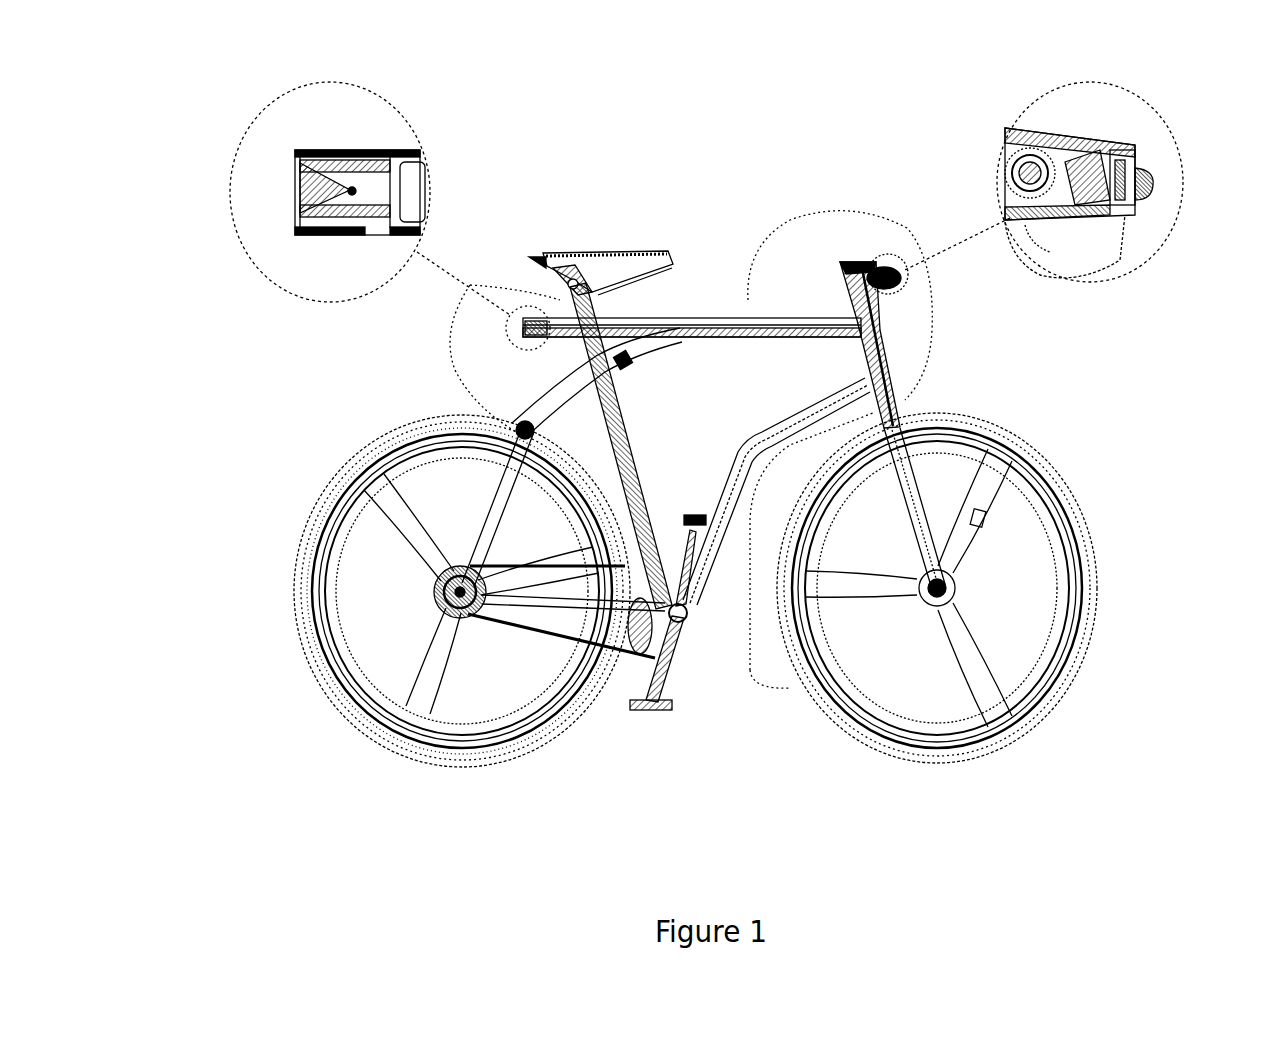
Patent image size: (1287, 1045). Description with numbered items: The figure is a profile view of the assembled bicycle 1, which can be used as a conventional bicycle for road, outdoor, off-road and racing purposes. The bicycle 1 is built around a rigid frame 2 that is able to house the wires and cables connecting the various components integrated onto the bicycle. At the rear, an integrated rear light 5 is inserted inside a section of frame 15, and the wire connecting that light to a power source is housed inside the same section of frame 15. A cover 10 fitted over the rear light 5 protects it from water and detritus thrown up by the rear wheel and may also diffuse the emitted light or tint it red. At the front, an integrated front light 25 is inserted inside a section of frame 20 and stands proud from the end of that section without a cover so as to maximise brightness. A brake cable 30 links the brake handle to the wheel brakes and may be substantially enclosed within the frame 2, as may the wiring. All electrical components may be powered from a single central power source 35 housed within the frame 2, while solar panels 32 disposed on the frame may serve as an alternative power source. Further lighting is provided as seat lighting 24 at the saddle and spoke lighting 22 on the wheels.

The bicycle 1 is at (597, 135).
The rigid frame 2 is at (778, 318).
The integrated rear light 5 is at (296, 152).
The cover 10 is at (296, 200).
The section of frame 15 is at (300, 234).
The section of frame 20 is at (1095, 140).
The spoke lighting 22 is at (982, 517).
The seat lighting 24 is at (530, 260).
The integrated front light 25 is at (1150, 195).
The brake cable 30 is at (883, 298).
The solar panels 32 is at (893, 365).
The central power source 35 is at (625, 640).